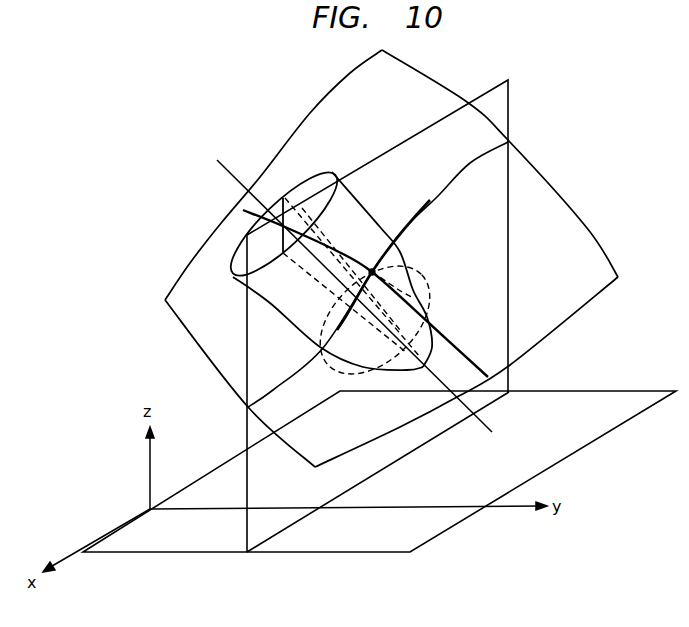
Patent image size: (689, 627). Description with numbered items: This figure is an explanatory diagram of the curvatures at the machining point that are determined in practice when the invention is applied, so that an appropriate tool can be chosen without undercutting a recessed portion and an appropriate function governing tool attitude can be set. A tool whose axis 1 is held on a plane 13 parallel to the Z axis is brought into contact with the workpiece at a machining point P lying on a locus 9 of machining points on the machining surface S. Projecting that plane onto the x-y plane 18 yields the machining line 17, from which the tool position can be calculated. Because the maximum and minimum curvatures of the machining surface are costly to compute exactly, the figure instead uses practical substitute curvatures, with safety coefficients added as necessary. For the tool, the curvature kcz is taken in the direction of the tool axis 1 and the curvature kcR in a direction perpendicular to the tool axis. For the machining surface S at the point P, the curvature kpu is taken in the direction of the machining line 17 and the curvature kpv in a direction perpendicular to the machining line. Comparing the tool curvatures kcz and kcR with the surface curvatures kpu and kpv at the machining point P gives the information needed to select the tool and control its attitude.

The axis 1 is at (227, 170).
The locus 9 is at (478, 158).
The vertical plane 13 is at (495, 108).
The machining line 17 is at (420, 447).
The x-y plane 18 is at (577, 438).
The machining surface S is at (555, 220).
The machining point P is at (372, 270).
The curvature in the direction of the machining line kpu is at (390, 255).
The curvature in a direction perpendicular to the machining line kpv is at (418, 307).
The curvature in a direction perpendicular to the tool axis kcR is at (397, 277).
The curvature in the direction of the tool axis kcz is at (412, 297).